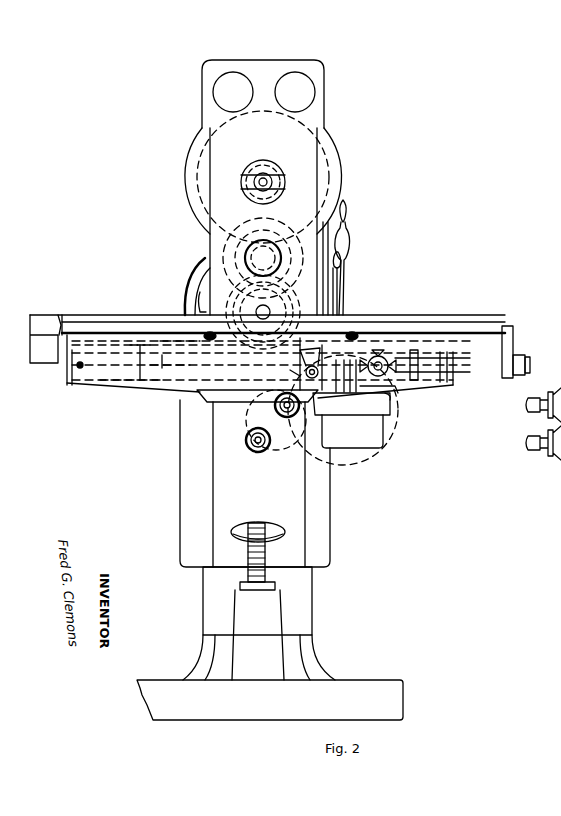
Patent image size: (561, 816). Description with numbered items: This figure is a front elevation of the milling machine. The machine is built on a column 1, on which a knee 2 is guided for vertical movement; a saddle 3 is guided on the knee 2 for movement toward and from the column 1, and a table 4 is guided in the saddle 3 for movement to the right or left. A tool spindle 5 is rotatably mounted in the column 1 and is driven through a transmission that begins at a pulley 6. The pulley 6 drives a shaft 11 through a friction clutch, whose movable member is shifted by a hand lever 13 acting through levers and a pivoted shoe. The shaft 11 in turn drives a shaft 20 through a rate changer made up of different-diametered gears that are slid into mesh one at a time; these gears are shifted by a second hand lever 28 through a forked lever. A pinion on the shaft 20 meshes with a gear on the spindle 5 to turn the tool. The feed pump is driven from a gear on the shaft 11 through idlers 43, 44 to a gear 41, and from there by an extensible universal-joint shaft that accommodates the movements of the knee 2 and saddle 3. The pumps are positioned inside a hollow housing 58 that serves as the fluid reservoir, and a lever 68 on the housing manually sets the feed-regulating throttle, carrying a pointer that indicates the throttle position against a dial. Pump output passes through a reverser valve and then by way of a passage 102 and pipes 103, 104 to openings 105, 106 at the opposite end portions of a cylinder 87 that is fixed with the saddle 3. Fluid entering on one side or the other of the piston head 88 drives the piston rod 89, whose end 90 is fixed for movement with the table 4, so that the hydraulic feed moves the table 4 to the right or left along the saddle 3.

The column 1 is at (312, 617).
The knee 2 is at (330, 540).
The saddle 3 is at (437, 387).
The table 4 is at (430, 318).
The tool spindle 5 is at (273, 173).
The pulley 6 is at (370, 358).
The shaft 11 is at (268, 308).
The hand lever 13 is at (342, 268).
The shaft 20 is at (257, 246).
The hand lever 28 is at (348, 236).
The gear 41 is at (297, 441).
The idler 43 is at (274, 401).
The idler 44 is at (251, 438).
The housing 58 is at (383, 435).
The lever 68 is at (388, 389).
The cylinder 87 is at (113, 381).
The piston head 88 is at (140, 382).
The piston rod 89 is at (177, 357).
The end of piston rod 90 is at (521, 356).
The passage 102 is at (306, 368).
The pipe 103 is at (162, 368).
The pipe 104 is at (407, 365).
The opening 105 is at (76, 368).
The opening 106 is at (453, 378).